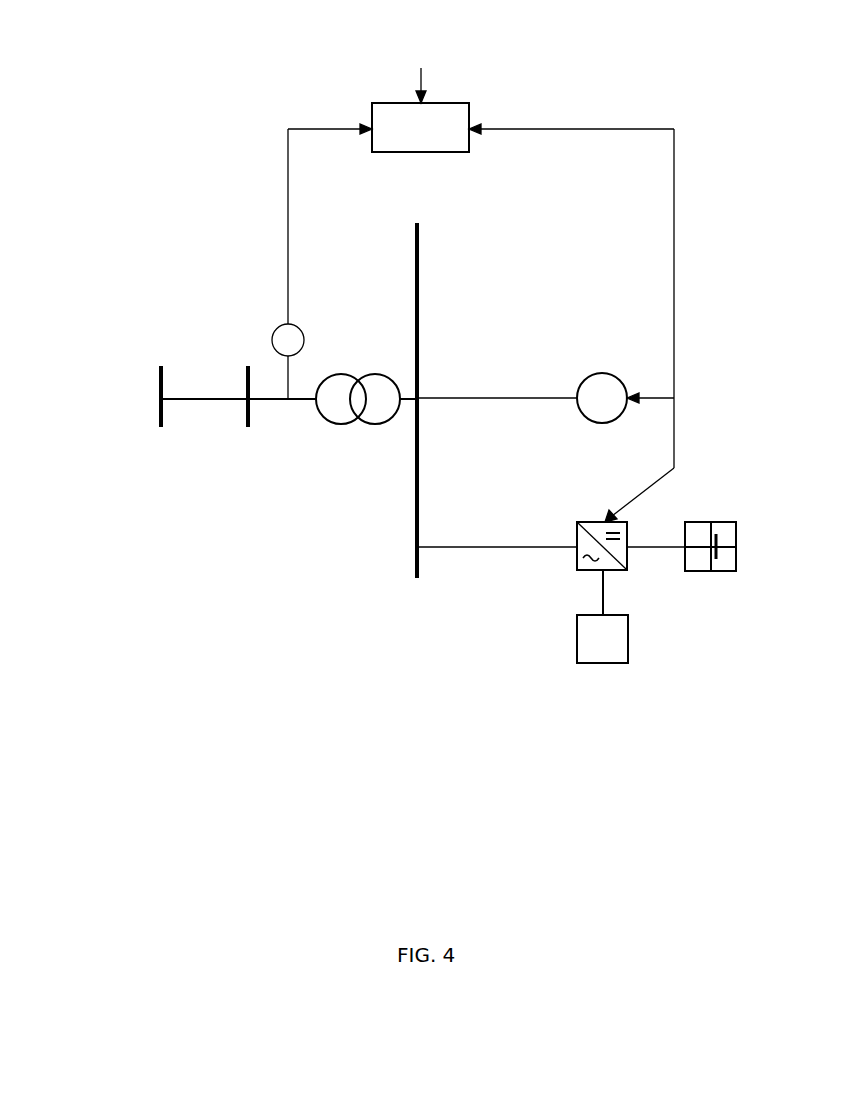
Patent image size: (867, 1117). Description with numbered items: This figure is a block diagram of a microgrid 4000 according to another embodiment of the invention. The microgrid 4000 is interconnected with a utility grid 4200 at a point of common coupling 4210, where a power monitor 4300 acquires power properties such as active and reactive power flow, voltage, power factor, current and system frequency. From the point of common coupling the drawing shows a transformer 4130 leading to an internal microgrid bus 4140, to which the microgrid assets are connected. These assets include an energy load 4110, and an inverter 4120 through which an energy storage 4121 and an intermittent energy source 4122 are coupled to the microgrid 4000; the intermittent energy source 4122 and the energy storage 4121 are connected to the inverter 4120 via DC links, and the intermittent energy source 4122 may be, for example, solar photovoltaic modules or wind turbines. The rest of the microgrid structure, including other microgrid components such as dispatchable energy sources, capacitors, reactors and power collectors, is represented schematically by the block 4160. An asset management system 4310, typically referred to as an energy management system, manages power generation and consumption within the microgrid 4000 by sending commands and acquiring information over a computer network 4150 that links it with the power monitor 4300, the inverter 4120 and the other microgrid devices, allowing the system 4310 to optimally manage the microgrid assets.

The microgrid 4000 is at (463, 35).
The asset management system 4310 is at (458, 121).
The other microgrid components 4160 is at (402, 84).
The network 4150 is at (630, 130).
The power monitor 4300 is at (270, 338).
The utility grid 4200 is at (157, 377).
The point of common coupling 4210 is at (246, 427).
The transformer 4130 is at (366, 386).
The plant bus 4140 is at (388, 400).
The energy load 4110 is at (601, 372).
The inverter 4120 is at (580, 522).
The energy storage 4121 is at (715, 521).
The intermittent energy source 4122 is at (575, 637).